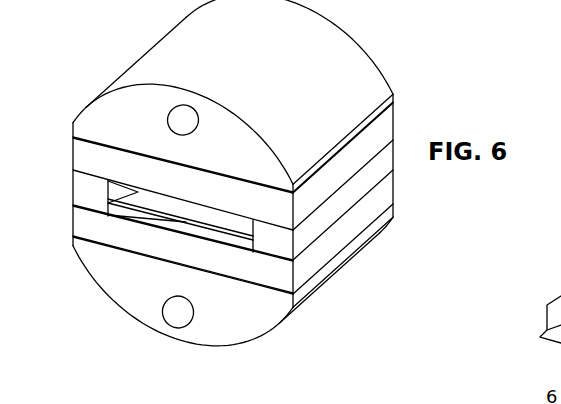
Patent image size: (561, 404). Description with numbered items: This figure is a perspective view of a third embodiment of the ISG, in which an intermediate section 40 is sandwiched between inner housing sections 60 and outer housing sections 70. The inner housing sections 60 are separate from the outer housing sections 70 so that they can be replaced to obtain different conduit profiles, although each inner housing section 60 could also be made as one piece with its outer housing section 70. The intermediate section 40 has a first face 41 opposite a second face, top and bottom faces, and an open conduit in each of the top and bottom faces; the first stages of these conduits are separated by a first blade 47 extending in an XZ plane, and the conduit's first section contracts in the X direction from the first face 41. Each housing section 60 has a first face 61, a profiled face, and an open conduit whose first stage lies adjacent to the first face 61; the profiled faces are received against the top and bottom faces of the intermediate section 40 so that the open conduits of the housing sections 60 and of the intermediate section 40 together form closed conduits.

The outer housing section 70 is at (373, 58).
The inner housing section 60 is at (385, 119).
The intermediate section 40 is at (385, 160).
The first face 41 is at (278, 248).
The first face 61 is at (278, 283).
The first blade 47 is at (203, 222).